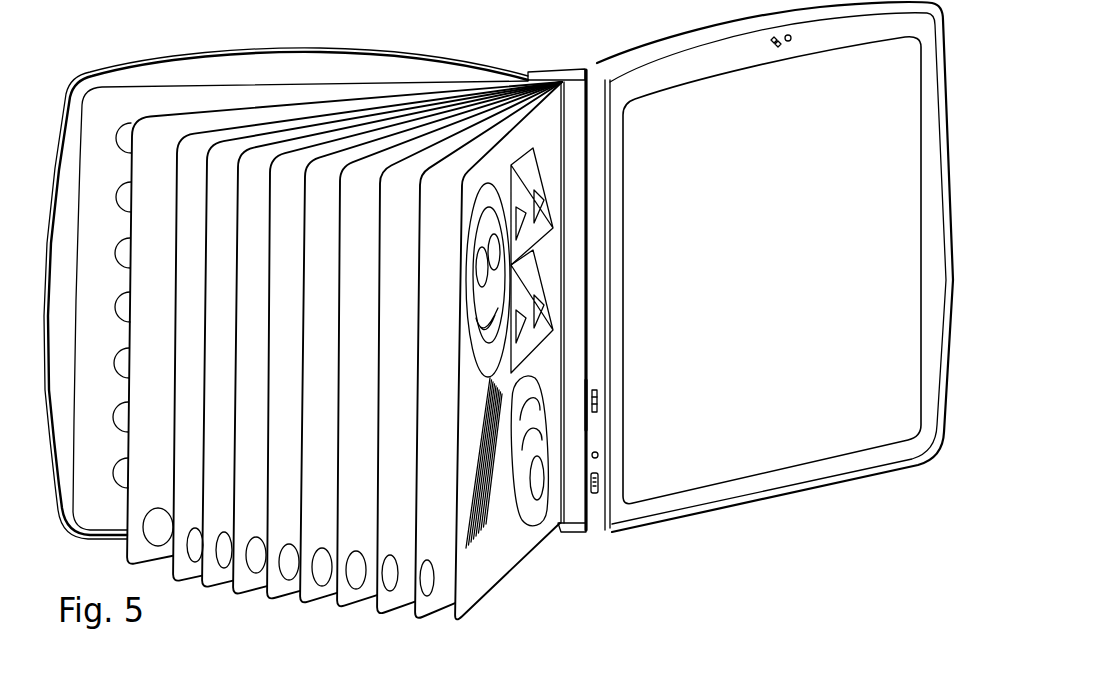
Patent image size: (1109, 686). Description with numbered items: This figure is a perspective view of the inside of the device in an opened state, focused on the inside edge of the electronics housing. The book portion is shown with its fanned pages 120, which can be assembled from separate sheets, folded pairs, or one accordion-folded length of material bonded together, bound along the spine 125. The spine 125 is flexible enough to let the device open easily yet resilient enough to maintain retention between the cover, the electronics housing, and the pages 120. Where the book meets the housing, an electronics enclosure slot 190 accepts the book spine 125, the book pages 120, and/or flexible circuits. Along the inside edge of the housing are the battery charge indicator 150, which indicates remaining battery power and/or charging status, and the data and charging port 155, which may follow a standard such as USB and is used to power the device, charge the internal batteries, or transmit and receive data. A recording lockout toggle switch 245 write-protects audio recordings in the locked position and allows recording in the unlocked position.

The pages 120 is at (262, 52).
The spine 125 is at (557, 70).
The electronics enclosure slot 190 is at (584, 90).
The battery charge indicator 150 is at (603, 456).
The data and charging port 155 is at (597, 490).
The recording lockout toggle switch 245 is at (587, 407).